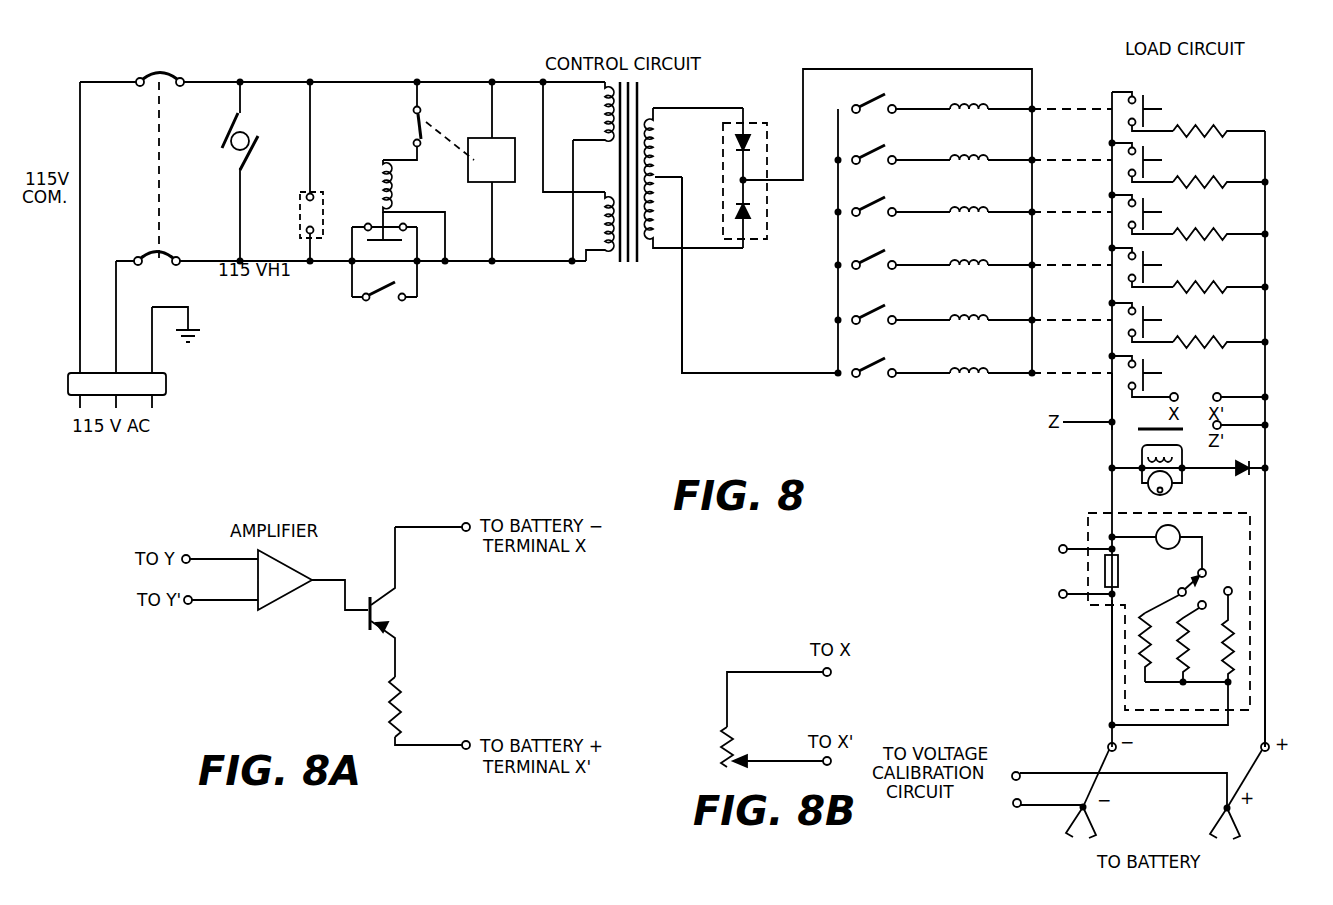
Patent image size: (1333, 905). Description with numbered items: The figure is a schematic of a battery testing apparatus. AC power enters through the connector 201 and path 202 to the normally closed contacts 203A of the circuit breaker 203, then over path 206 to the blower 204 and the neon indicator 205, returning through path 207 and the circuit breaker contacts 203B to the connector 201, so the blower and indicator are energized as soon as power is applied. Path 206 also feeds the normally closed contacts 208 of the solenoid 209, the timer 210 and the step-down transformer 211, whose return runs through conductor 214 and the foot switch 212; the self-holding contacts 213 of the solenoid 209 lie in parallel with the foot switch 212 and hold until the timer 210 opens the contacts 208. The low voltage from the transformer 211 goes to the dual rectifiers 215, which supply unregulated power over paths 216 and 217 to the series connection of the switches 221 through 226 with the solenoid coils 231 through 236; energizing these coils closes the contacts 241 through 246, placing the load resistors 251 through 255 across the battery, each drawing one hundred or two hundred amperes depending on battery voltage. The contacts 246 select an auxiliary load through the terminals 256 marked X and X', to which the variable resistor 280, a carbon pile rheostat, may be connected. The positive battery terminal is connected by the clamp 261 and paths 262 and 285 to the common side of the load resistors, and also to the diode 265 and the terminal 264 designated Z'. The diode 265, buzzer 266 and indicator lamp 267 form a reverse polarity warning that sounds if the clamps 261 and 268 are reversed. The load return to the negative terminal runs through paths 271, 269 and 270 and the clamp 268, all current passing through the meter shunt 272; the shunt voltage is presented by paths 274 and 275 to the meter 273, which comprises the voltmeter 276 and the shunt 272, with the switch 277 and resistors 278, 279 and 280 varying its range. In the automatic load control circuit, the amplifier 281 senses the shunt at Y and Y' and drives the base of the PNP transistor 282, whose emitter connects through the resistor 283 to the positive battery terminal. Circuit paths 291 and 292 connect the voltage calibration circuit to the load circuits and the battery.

In FIG. 8, the connector 201 is at (168, 380).
In FIG. 8, the path 202 is at (78, 275).
In FIG. 8, the circuit breaker 203 is at (166, 156).
In FIG. 8, the normally closed contacts 203A is at (182, 60).
In FIG. 8, the normally closed circuit breaker contacts 203B is at (176, 251).
In FIG. 8, the blower 204 is at (252, 145).
In FIG. 8, the neon indicator 205 is at (298, 215).
In FIG. 8, the path 206 is at (288, 80).
In FIG. 8, the path 207 is at (308, 268).
In FIG. 8, the normally closed contacts 208 is at (428, 122).
In FIG. 8, the solenoid 209 is at (378, 182).
In FIG. 8, the timer 210 is at (492, 196).
In FIG. 8, the step-down transformer 211 is at (597, 272).
In FIG. 8, the foot switch 212 is at (380, 300).
In FIG. 8, the self-holding contacts 213 is at (372, 256).
In FIG. 8, the conductor 214 is at (518, 265).
In FIG. 8, the dual rectifiers 215 is at (760, 122).
In FIG. 8, the path 216 is at (900, 68).
In FIG. 8, the path 217 is at (720, 375).
In FIG. 8, the switch 221 is at (855, 101).
In FIG. 8, the switch 226 is at (875, 378).
In FIG. 8, the solenoid coil 231 is at (960, 105).
In FIG. 8, the solenoid coil 236 is at (968, 380).
In FIG. 8, the contacts 241 is at (1148, 92).
In FIG. 8, the contacts 246 is at (1150, 373).
In FIG. 8, the resistor load 251 is at (1230, 128).
In FIG. 8, the resistor load 255 is at (1232, 345).
In FIG. 8, the terminals 256 is at (1225, 392).
In FIG. 8, the terminal 264 is at (1225, 421).
In FIG. 8, the diode 265 is at (1250, 462).
In FIG. 8, the buzzer 266 is at (1142, 445).
In FIG. 8, the indicator lamp 267 is at (1148, 488).
In FIG. 8, the battery clamp 268 is at (1068, 822).
In FIG. 8, the path 269 is at (1100, 638).
In FIG. 8, the path 270 is at (1092, 785).
In FIG. 8, the path 271 is at (1110, 390).
In FIG. 8, the meter shunt 272 is at (1095, 575).
In FIG. 8, the meter 273 is at (1252, 513).
In FIG. 8, the path 274 is at (1140, 537).
In FIG. 8, the path 275 is at (1155, 727).
In FIG. 8, the voltmeter 276 is at (1195, 531).
In FIG. 8, the switch 277 is at (1210, 586).
In FIG. 8, the resistor 278 is at (1140, 648).
In FIG. 8, the resistor 279 is at (1190, 672).
In FIG. 8, the variable resistor 280 is at (1232, 620).
In FIG. 8B, the variable resistor 280 is at (722, 740).
In FIG. 8A, the amplifier 281 is at (300, 590).
In FIG. 8A, the PNP transistor 282 is at (357, 615).
In FIG. 8A, the resistor 283 is at (415, 700).
In FIG. 8, the path 285 is at (1267, 650).
In FIG. 8, the circuit path 291 is at (1053, 772).
In FIG. 8, the circuit path 292 is at (1025, 805).
In FIG. 8, the clamp 261 is at (1242, 812).
In FIG. 8, the path 262 is at (1250, 790).